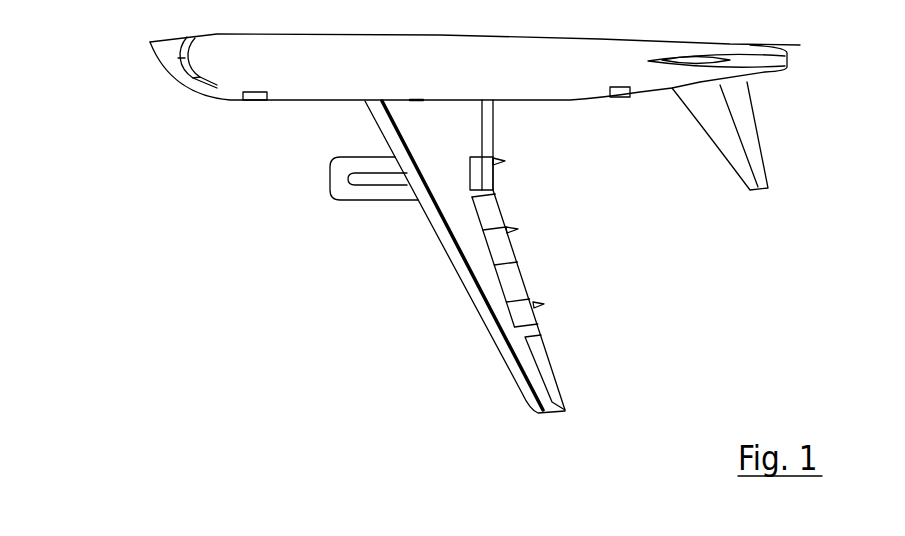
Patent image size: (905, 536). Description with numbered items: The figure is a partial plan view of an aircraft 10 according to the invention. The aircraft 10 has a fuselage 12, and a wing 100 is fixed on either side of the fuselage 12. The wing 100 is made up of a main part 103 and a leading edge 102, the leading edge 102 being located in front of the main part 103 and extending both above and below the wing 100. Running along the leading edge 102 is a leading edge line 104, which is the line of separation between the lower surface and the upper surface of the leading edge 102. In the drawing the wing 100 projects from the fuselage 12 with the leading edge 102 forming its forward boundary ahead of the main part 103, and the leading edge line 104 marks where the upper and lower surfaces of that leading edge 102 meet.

The aircraft 10 is at (195, 130).
The fuselage 12 is at (290, 77).
The wing 100 is at (527, 202).
The leading edge 102 is at (450, 238).
The main part 103 is at (485, 266).
The leading edge line 104 is at (470, 293).